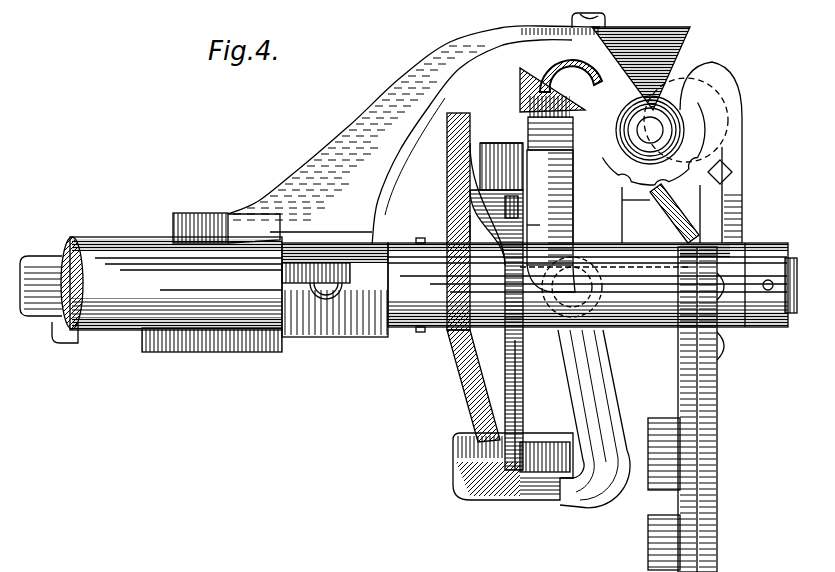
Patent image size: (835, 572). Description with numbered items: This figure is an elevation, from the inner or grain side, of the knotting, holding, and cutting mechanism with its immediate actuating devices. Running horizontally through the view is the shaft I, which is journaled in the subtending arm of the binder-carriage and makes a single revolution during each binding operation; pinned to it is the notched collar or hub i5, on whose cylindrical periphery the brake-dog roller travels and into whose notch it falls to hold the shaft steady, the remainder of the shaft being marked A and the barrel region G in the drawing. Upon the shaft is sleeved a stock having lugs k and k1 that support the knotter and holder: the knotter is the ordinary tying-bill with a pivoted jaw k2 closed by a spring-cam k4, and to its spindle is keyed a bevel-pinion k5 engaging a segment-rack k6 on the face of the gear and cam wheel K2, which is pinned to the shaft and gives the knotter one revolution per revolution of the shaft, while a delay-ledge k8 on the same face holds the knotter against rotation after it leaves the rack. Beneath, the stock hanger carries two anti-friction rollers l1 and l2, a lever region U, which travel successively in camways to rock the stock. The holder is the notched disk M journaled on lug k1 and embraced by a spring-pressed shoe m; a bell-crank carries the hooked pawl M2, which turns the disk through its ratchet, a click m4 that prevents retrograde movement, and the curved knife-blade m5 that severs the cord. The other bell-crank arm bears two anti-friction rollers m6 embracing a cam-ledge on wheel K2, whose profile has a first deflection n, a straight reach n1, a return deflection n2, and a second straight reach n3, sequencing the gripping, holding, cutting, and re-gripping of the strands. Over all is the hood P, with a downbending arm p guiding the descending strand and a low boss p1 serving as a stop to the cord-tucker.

The shaft I is at (58, 272).
The gun barrel G is at (167, 294).
The notched collar or hub i5 is at (452, 276).
The shaft A is at (592, 285).
The hood P is at (462, 38).
The low boss p1 is at (573, 22).
The downbending arm p is at (641, 68).
The lug or offset k1 is at (566, 62).
The spring-cam k4 is at (519, 94).
The gear and cam wheel K2 is at (447, 182).
The return deflection n2 is at (448, 224).
The deflection n is at (470, 386).
The delay-ledge k8 is at (505, 146).
The straight reach n1 is at (508, 200).
The second straight reach n3 is at (523, 345).
The lug or offset k is at (551, 221).
The segment-rack k6 is at (534, 230).
The spring-pressed shoe m is at (572, 287).
The bevel-pinion k5 is at (604, 168).
The pivoted jaw k2 is at (628, 200).
The click m4 is at (662, 200).
The notched disk M is at (714, 95).
The curved knife-blade m5 is at (686, 120).
The vertical arm U is at (702, 420).
The anti-friction roller l1 is at (660, 418).
The anti-friction roller l2 is at (650, 530).
The hooked pawl M2 is at (567, 392).
The anti-friction rollers m6 is at (456, 440).